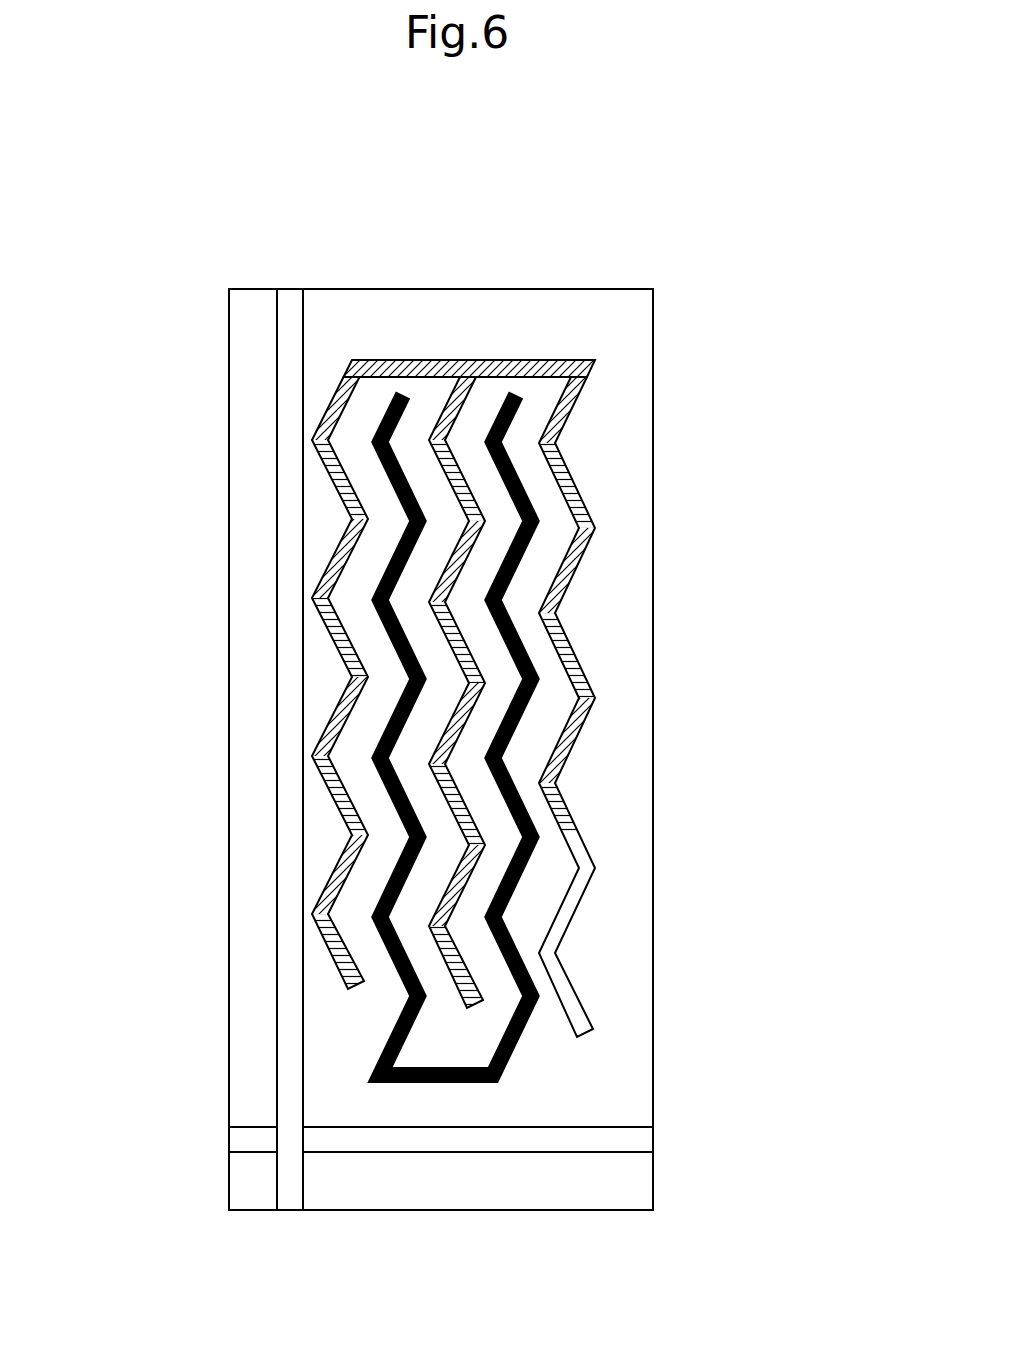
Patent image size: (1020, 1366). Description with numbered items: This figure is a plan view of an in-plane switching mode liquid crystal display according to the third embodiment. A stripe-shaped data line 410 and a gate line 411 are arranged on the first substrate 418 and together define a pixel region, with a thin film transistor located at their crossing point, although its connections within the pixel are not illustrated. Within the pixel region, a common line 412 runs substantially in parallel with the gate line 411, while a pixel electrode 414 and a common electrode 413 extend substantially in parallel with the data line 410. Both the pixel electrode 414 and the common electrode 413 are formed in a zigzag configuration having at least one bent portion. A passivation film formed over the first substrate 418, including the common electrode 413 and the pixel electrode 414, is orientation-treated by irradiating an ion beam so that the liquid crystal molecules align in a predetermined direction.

The data line 410 is at (290, 681).
The gate line 411 is at (447, 1135).
The common line 412 is at (484, 362).
The common electrode 413 is at (557, 598).
The pixel electrode 414 is at (540, 837).
The first substrate 418 is at (420, 289).